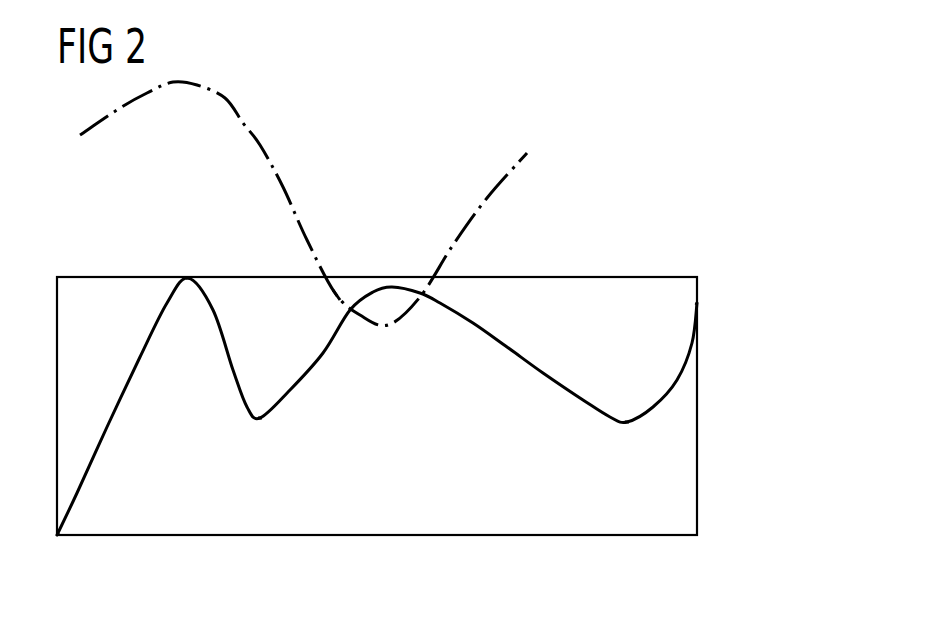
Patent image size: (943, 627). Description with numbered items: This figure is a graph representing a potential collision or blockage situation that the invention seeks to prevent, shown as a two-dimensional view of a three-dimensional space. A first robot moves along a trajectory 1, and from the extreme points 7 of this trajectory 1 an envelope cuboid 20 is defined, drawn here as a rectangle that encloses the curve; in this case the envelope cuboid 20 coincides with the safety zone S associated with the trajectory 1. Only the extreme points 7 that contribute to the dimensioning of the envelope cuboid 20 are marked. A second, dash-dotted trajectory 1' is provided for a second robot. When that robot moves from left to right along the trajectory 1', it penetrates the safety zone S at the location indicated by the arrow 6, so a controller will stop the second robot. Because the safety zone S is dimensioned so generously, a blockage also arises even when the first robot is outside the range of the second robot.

The trajectory 1 is at (377, 406).
The trajectory 1' is at (308, 204).
The arrow 6 is at (344, 252).
The extreme points 7 is at (185, 252).
The envelope cuboid 20 is at (697, 370).